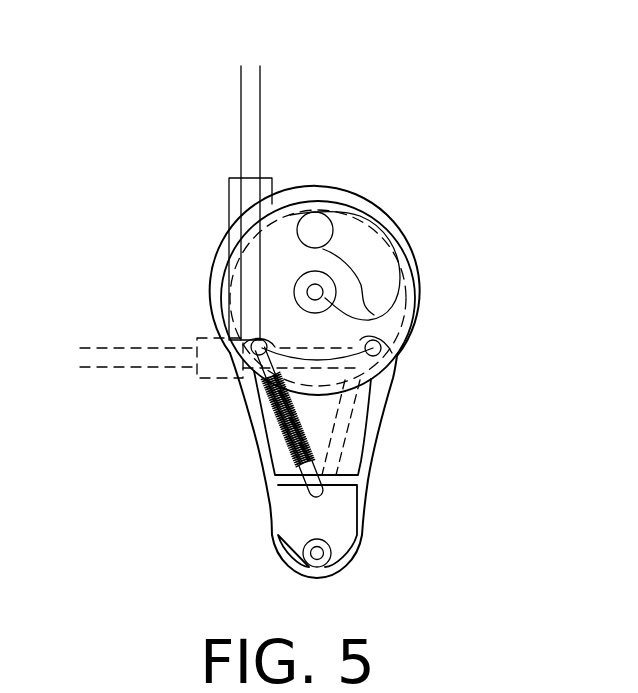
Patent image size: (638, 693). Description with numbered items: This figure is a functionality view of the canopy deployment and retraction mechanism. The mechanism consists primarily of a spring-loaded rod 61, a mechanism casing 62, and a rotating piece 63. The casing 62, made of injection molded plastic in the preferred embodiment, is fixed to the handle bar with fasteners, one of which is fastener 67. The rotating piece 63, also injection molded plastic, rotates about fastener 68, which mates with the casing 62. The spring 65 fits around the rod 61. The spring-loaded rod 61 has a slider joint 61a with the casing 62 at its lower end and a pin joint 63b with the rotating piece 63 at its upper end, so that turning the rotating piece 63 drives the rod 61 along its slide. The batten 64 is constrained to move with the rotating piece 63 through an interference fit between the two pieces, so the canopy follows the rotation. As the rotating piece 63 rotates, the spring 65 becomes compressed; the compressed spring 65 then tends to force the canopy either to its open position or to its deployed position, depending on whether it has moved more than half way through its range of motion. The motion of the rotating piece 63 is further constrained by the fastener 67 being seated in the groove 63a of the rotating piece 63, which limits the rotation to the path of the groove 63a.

The spring-loaded rod 61 is at (253, 363).
The slider joint 61a is at (330, 488).
The mechanism casing 62 is at (365, 537).
The rotating piece 63 is at (229, 200).
The groove 63a is at (380, 260).
The pin joint 63b is at (230, 342).
The batten 64 is at (252, 128).
The spring 65 is at (288, 443).
The fastener 67 is at (325, 227).
The fastener 68 is at (325, 298).